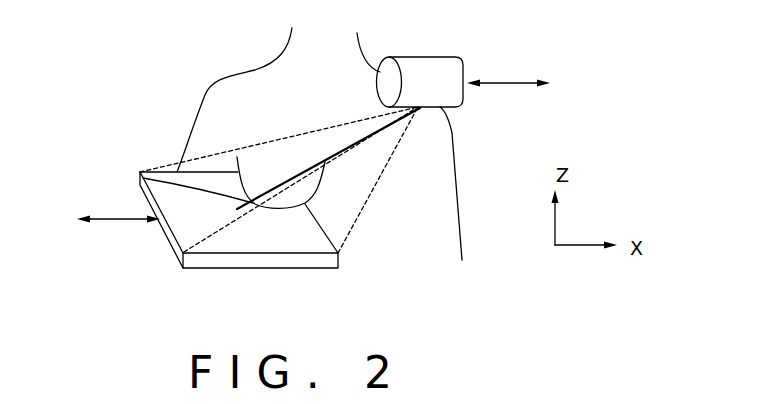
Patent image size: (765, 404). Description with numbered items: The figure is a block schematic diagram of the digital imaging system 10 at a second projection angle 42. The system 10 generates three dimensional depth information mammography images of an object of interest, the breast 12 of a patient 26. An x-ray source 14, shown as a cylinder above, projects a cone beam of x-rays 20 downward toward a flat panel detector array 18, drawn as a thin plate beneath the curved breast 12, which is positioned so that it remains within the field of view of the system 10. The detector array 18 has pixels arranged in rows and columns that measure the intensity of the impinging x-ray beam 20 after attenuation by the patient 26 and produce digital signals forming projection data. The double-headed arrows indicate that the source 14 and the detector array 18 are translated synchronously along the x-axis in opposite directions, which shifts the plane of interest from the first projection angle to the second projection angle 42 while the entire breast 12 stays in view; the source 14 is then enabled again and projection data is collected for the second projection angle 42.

The digital imaging system 10 is at (200, 60).
The breast 12 is at (317, 190).
The x-ray source 14 is at (433, 57).
The detector array 18 is at (242, 270).
The x-ray beam 20 is at (375, 207).
The patient 26 is at (463, 245).
The second projection angle 42 is at (141, 180).